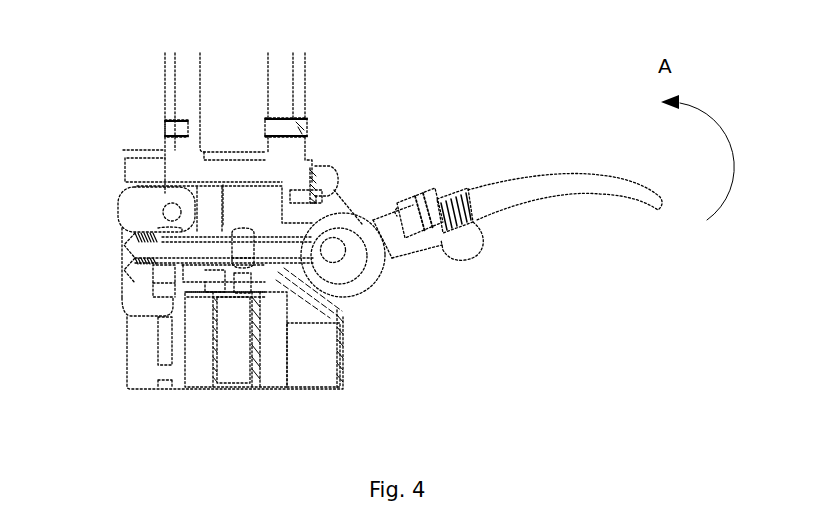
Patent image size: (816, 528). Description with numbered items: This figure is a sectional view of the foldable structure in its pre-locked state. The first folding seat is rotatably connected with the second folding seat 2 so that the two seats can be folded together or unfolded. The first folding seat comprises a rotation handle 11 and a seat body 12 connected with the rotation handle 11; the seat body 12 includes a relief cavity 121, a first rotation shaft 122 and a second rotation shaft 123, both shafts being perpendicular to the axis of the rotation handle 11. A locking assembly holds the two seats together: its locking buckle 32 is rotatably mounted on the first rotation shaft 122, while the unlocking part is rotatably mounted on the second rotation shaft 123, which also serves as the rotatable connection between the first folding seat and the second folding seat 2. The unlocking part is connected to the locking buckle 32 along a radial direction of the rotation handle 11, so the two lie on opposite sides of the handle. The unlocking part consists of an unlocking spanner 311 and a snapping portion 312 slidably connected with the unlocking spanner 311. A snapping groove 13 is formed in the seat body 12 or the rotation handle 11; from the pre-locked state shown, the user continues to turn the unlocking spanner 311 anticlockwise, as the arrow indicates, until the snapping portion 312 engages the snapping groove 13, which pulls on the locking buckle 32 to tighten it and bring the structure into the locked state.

The second folding seat 2 is at (155, 348).
The rotation handle 11 is at (192, 94).
The seat body 12 is at (165, 152).
The snapping groove 13 is at (330, 173).
The locking buckle 32 is at (128, 282).
The relief cavity 121 is at (290, 120).
The first rotation shaft 122 is at (168, 218).
The second rotation shaft 123 is at (338, 252).
The unlocking spanner 311 is at (570, 188).
The snapping portion 312 is at (438, 193).